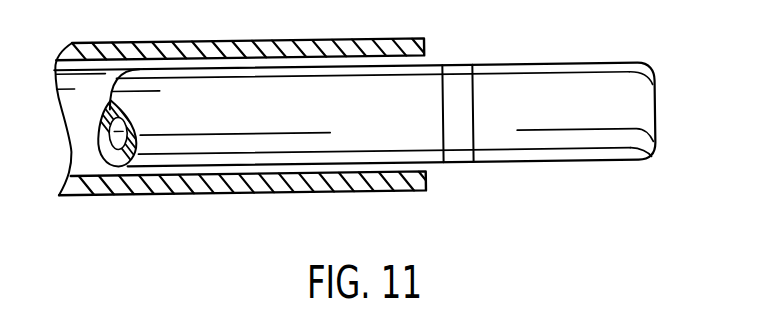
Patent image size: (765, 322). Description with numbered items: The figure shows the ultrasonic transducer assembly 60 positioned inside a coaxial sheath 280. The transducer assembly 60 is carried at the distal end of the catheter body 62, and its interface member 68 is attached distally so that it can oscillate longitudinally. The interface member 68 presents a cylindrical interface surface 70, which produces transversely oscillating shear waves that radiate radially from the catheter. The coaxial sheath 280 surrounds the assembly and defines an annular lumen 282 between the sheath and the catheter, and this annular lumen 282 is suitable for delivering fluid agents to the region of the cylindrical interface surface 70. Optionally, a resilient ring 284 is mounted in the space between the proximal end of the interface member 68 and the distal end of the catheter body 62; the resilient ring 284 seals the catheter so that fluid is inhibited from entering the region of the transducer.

The ultrasonic transducer assembly 60 is at (619, 36).
The catheter body 62 is at (316, 147).
The interface member 68 is at (656, 82).
The cylindrical interface surface 70 is at (578, 164).
The coaxial sheath 280 is at (296, 38).
The annular lumen 282 is at (350, 170).
The resilient ring 284 is at (460, 82).